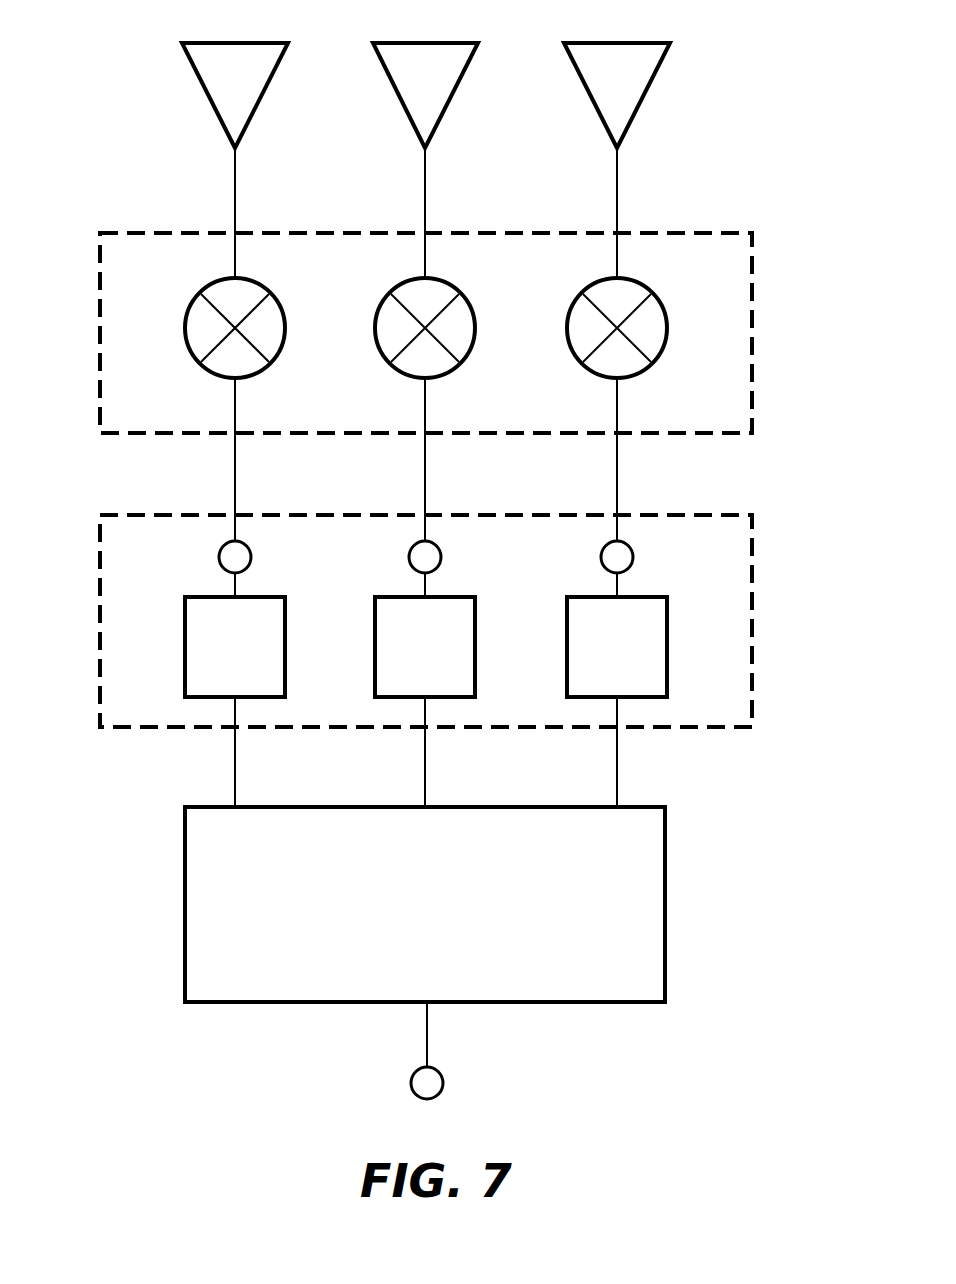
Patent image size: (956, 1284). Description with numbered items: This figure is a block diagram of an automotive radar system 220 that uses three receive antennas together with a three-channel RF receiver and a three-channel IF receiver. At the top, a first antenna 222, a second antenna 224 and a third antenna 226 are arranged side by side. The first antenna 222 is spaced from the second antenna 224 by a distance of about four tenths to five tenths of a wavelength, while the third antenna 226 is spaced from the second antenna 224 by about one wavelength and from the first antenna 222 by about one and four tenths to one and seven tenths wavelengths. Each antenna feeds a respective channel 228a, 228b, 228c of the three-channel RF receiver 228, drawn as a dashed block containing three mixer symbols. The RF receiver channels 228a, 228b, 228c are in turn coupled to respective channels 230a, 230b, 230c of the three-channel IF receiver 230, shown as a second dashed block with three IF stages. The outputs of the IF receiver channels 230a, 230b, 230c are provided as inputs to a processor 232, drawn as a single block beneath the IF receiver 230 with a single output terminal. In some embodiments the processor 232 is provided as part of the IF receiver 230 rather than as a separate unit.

The radar system 220 is at (720, 148).
The first antenna 222 is at (211, 82).
The second antenna 224 is at (401, 82).
The third antenna 226 is at (593, 82).
The three-channel RF receiver 228 is at (174, 418).
The RF receiver channel 228a is at (254, 282).
The RF receiver channel 228b is at (444, 282).
The RF receiver channel 228c is at (627, 282).
The three-channel IF receiver 230 is at (166, 568).
The IF receiver channel 230a is at (204, 680).
The IF receiver channel 230b is at (394, 680).
The IF receiver channel 230c is at (586, 680).
The processor 232 is at (403, 978).